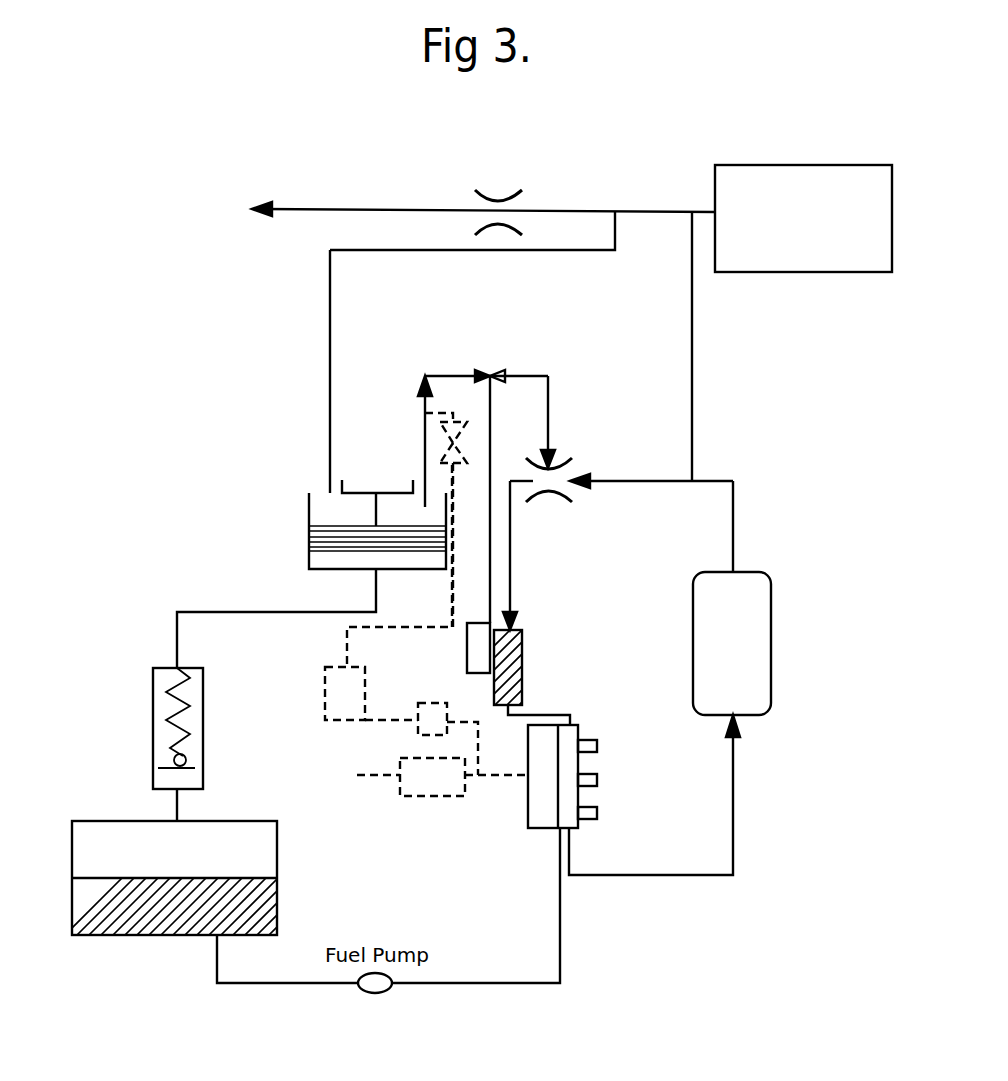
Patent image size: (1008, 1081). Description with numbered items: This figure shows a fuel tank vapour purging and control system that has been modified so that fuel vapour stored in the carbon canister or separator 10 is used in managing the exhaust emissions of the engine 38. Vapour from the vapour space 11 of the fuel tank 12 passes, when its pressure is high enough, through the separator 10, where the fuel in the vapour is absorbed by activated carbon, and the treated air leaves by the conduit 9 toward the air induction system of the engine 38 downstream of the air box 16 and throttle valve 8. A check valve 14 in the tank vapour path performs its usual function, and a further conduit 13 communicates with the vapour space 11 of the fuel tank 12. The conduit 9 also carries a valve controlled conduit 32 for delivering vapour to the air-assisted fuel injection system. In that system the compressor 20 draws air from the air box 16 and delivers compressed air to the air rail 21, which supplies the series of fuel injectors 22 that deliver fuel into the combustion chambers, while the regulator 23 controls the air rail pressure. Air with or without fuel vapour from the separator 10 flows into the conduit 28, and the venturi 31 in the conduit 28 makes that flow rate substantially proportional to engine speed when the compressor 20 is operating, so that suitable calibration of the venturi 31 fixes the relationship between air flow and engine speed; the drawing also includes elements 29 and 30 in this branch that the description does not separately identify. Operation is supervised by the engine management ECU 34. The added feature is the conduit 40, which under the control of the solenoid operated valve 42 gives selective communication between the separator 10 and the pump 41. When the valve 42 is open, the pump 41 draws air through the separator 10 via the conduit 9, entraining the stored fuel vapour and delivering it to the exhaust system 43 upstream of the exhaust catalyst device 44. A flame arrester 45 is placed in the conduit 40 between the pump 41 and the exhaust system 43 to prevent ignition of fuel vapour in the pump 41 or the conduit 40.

The throttle valve 8 is at (497, 197).
The conduit 9 is at (330, 360).
The separator 10 is at (343, 515).
The vapour space 11 is at (147, 830).
The fuel tank 12 is at (277, 918).
The conduit 13 is at (275, 612).
The check valve 14 is at (203, 740).
The air box 16 is at (778, 165).
The compressor 20 is at (527, 672).
The air rail 21 is at (578, 828).
The fuel injectors 22 is at (597, 812).
The regulator 23 is at (760, 654).
The conduit 28 is at (692, 400).
The check valve 29 is at (495, 372).
The air supply line 30 is at (548, 376).
The venturi 31 is at (548, 497).
The valve controlled conduit 32 is at (309, 538).
The engine management ECU 34 is at (467, 652).
The engine 38 is at (528, 832).
The conduit 40 is at (452, 607).
The pump 41 is at (340, 720).
The solenoid operated valve 42 is at (455, 443).
The exhaust system 43 is at (505, 780).
The exhaust catalyst device 44 is at (420, 800).
The flame arrester 45 is at (418, 742).